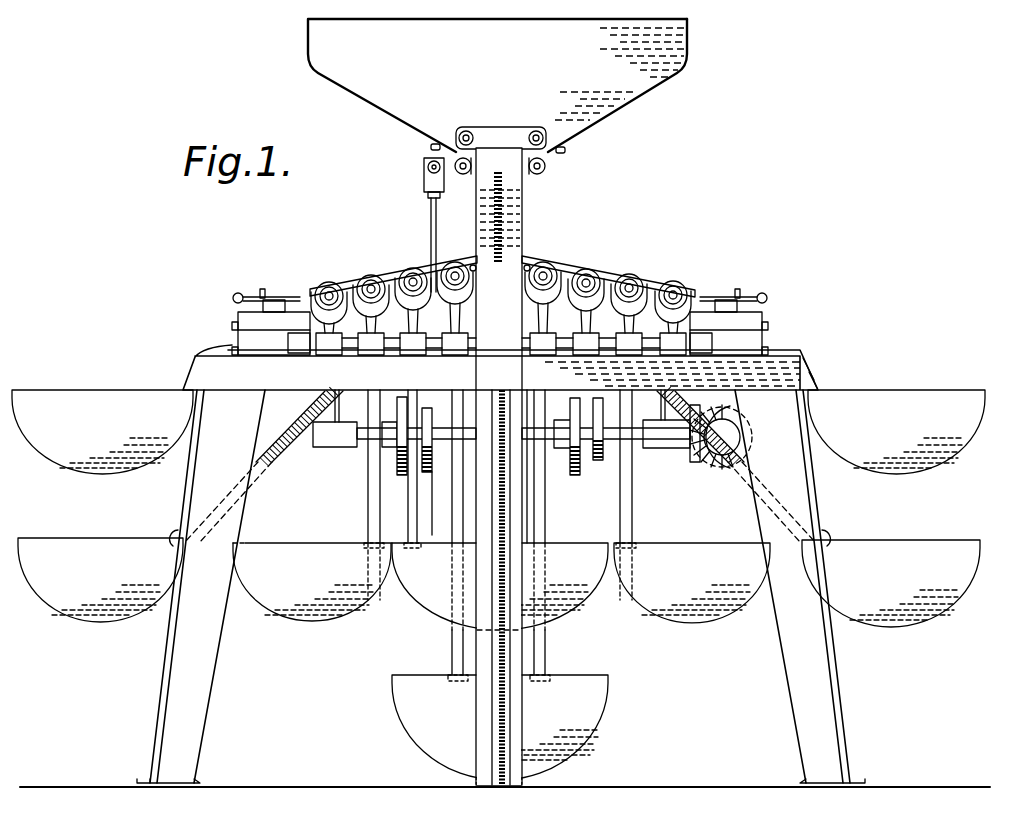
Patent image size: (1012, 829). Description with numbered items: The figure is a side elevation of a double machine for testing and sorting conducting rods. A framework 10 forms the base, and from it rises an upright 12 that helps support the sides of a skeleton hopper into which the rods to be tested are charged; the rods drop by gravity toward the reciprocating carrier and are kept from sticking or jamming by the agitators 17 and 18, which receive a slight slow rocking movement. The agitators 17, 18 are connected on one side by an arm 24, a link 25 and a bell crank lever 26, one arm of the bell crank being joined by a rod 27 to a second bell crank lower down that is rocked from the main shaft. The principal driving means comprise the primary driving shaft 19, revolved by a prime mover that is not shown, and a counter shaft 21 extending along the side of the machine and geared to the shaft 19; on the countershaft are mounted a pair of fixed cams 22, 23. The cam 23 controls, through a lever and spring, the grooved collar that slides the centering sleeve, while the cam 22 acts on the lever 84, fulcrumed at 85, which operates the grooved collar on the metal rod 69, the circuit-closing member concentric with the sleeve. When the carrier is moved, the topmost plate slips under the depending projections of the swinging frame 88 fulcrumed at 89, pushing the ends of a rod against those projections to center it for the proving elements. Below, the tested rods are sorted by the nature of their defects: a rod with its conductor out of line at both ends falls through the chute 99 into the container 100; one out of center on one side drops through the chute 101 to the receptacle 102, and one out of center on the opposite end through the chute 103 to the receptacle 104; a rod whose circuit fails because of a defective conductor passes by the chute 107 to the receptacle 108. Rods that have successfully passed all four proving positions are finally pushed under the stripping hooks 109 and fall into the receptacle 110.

The framework 10 is at (501, 564).
The upright 12 is at (524, 252).
The agitator 17 is at (431, 147).
The agitator 18 is at (565, 150).
The primary driving shaft 19 is at (724, 437).
The counter shaft 21 is at (625, 436).
The cam 22 is at (396, 454).
The cam 23 is at (600, 410).
The arm 24 is at (546, 170).
The link 25 is at (515, 132).
The bell crank lever 26 is at (448, 186).
The rod 27 is at (430, 219).
The metal rod 69 is at (405, 270).
The lever 84 is at (410, 337).
The fulcrum 85 is at (604, 340).
The swinging frame 88 is at (340, 283).
The fulcrum 89 is at (473, 264).
The chute 99 is at (450, 648).
The container 100 is at (500, 727).
The chute 101 is at (585, 529).
The receptacle 102 is at (500, 586).
The chute 103 is at (366, 490).
The receptacle 104 is at (501, 583).
The chute 107 is at (175, 534).
The receptacle 108 is at (499, 582).
The stripping hooks 109 is at (278, 300).
The receptacle 110 is at (498, 432).